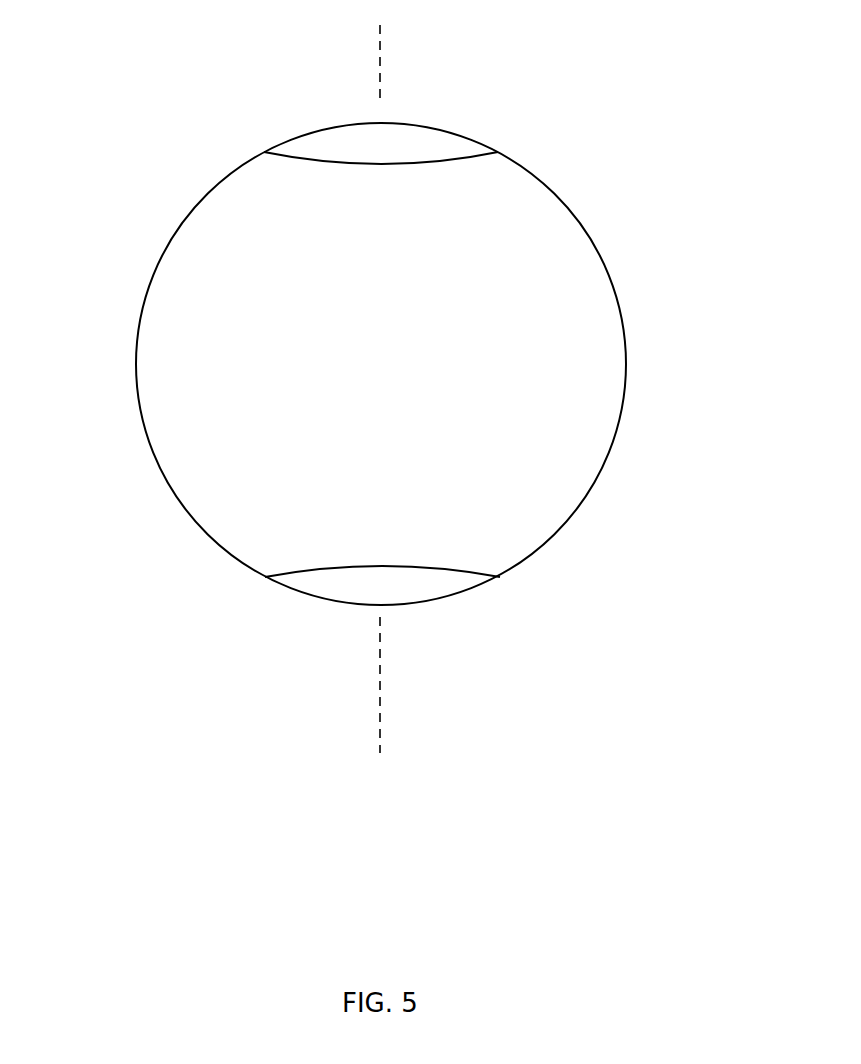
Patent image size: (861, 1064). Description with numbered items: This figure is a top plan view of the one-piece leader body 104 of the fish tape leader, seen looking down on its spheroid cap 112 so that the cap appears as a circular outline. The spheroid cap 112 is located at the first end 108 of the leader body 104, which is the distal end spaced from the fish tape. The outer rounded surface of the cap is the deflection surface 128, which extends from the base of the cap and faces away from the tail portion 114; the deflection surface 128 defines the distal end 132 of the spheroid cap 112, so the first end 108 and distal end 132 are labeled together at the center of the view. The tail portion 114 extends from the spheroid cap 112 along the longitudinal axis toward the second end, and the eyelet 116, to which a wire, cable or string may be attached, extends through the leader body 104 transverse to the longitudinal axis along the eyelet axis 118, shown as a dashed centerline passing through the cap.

The leader body 104 is at (644, 214).
The first end 108 is at (407, 385).
The distal end 132 is at (407, 385).
The spheroid cap 112 is at (492, 464).
The tail portion 114 is at (410, 124).
The eyelet 116 is at (382, 577).
The eyelet axis 118 is at (380, 728).
The deflection surface 128 is at (243, 420).